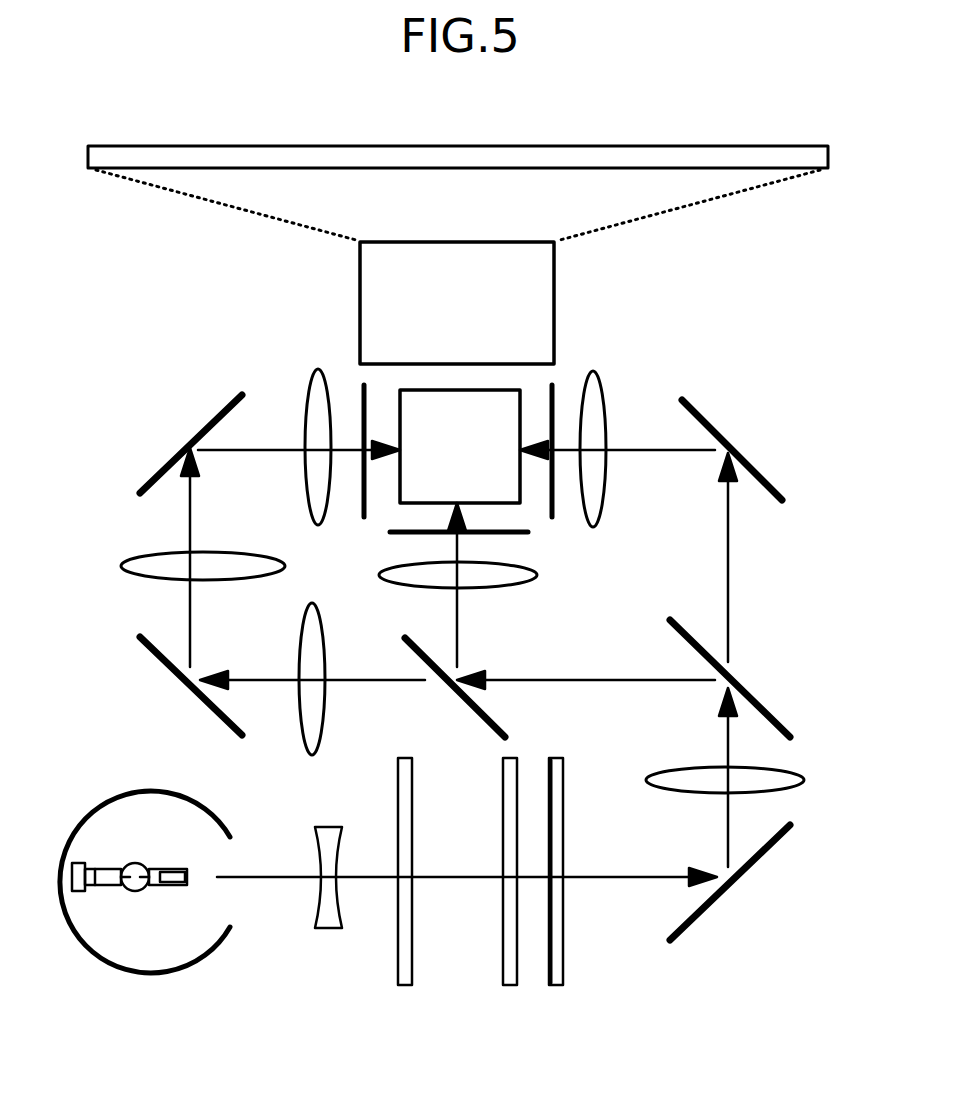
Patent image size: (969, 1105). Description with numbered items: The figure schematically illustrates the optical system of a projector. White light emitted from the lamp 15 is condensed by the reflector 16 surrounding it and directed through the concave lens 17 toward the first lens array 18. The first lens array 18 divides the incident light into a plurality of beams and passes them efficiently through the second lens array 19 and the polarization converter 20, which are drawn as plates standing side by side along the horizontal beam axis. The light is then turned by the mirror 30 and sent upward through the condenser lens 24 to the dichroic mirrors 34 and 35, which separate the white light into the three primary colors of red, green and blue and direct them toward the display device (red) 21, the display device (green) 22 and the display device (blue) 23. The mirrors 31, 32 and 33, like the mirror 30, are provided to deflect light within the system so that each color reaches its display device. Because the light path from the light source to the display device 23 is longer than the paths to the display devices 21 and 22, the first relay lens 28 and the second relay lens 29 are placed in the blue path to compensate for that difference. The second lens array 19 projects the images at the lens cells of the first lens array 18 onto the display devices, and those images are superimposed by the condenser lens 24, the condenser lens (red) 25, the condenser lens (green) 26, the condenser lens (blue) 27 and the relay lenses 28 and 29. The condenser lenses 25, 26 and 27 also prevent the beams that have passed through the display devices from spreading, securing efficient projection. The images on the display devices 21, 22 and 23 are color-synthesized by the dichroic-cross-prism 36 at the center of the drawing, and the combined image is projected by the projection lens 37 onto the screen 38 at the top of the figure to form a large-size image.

The lamp 15 is at (133, 863).
The reflector 16 is at (120, 965).
The concave lens 17 is at (328, 930).
The first lens array 18 is at (407, 987).
The second lens array 19 is at (512, 987).
The polarization converter 20 is at (558, 987).
The display device (red) 21 is at (552, 515).
The display device (green) 22 is at (520, 535).
The display device (blue) 23 is at (364, 510).
The condenser lens 24 is at (803, 785).
The condenser lens (red) 25 is at (600, 378).
The condenser lens (green) 26 is at (492, 587).
The condenser lens (blue) 27 is at (306, 385).
The first relay lens 28 is at (306, 745).
The second relay lens 29 is at (124, 565).
The mirror 30 is at (692, 925).
The mirror 31 is at (706, 418).
The mirror 32 is at (205, 428).
The mirror 33 is at (170, 672).
The dichroic mirror 34 is at (753, 690).
The dichroic mirror 35 is at (500, 722).
The dichroic-cross-prism 36 is at (410, 408).
The projection lens 37 is at (543, 285).
The screen 38 is at (180, 146).